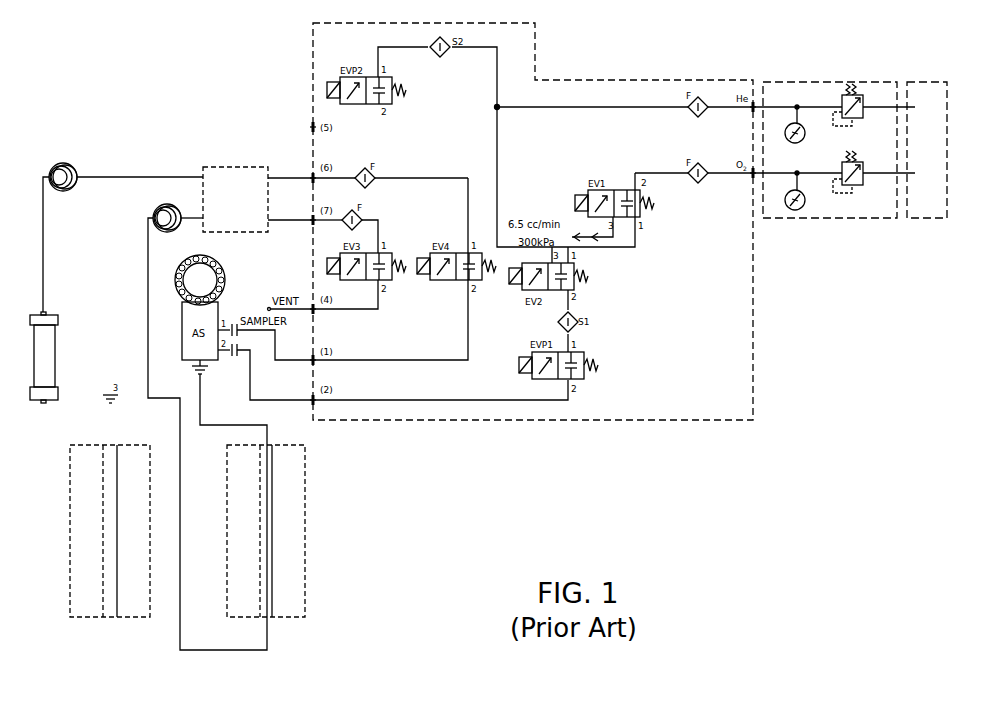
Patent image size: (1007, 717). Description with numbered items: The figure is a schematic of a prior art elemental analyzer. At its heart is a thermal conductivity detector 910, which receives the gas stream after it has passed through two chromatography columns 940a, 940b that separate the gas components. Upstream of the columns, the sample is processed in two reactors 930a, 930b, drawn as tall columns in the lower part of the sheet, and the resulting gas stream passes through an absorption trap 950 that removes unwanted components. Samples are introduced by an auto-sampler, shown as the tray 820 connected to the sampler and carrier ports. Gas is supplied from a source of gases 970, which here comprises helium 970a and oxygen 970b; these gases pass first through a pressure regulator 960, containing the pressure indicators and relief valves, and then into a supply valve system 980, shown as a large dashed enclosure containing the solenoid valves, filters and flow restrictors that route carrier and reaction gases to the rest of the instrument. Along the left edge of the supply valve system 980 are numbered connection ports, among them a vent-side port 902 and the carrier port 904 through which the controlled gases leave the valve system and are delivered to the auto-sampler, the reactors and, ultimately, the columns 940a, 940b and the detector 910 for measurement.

The vent port 902 is at (268, 134).
The carrier gas port 904 is at (293, 403).
The thermal conductivity detector 910 is at (245, 234).
The autosampler tray 820 is at (227, 283).
The chromatography column 940a is at (161, 208).
The chromatography column 940b is at (63, 163).
The absorption trap 950 is at (58, 319).
The reactor 930a is at (305, 535).
The reactor 930b is at (138, 445).
The pressure regulator 960 is at (835, 219).
The source of gases 970 is at (927, 168).
The helium 970a is at (925, 116).
The oxygen 970b is at (925, 184).
The supply valve system 980 is at (486, 421).